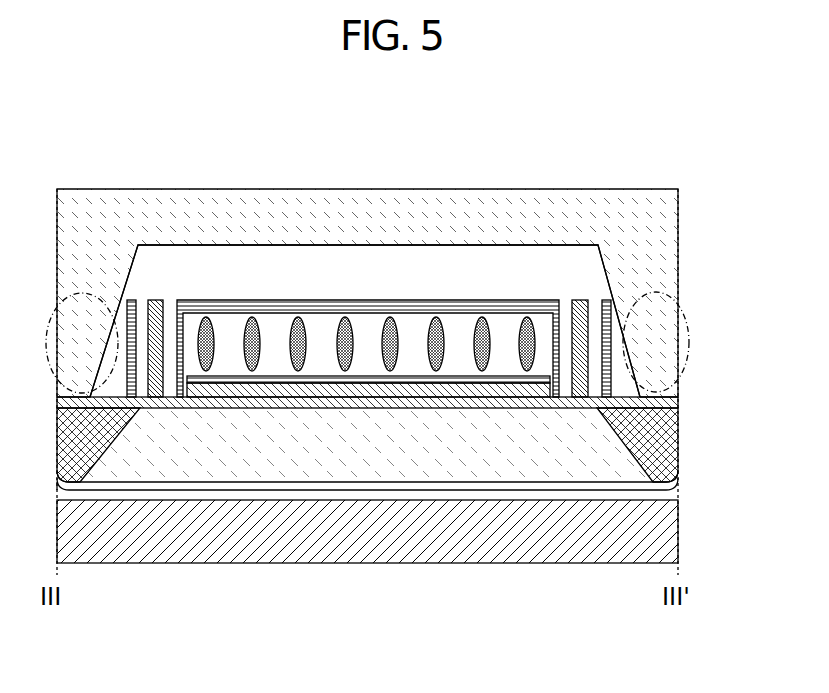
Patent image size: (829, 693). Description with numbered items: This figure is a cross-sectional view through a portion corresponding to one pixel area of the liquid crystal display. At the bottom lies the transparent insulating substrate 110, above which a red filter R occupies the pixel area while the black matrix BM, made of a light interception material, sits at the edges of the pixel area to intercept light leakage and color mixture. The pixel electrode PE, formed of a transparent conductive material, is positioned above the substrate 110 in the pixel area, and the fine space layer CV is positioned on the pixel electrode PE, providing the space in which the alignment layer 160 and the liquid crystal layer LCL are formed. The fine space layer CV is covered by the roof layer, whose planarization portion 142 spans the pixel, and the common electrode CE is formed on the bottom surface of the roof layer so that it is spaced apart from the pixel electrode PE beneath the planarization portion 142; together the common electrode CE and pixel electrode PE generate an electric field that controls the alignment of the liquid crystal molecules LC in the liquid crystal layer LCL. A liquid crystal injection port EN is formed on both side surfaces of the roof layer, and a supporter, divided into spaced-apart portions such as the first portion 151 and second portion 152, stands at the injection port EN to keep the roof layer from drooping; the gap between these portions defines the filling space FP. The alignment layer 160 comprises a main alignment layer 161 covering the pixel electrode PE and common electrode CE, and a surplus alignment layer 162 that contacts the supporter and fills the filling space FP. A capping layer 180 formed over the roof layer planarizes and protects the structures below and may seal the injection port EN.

The substrate 110 is at (680, 533).
The planarization portion 142 is at (390, 263).
The first portion 151 is at (133, 300).
The second portion 152 is at (158, 315).
The alignment layer 160 is at (255, 630).
The main alignment layer 161 is at (284, 313).
The surplus alignment layer 162 is at (182, 300).
The capping layer 180 is at (582, 206).
The liquid crystal injection port EN is at (72, 318).
The filling space FP is at (170, 322).
The common electrode CE is at (285, 300).
The pixel electrode PE is at (488, 385).
The liquid crystal molecules LC is at (483, 340).
The liquid crystal layer LCL is at (458, 330).
The fine space layer CV is at (512, 336).
The black matrix BM is at (367, 445).
The red filter R is at (366, 445).